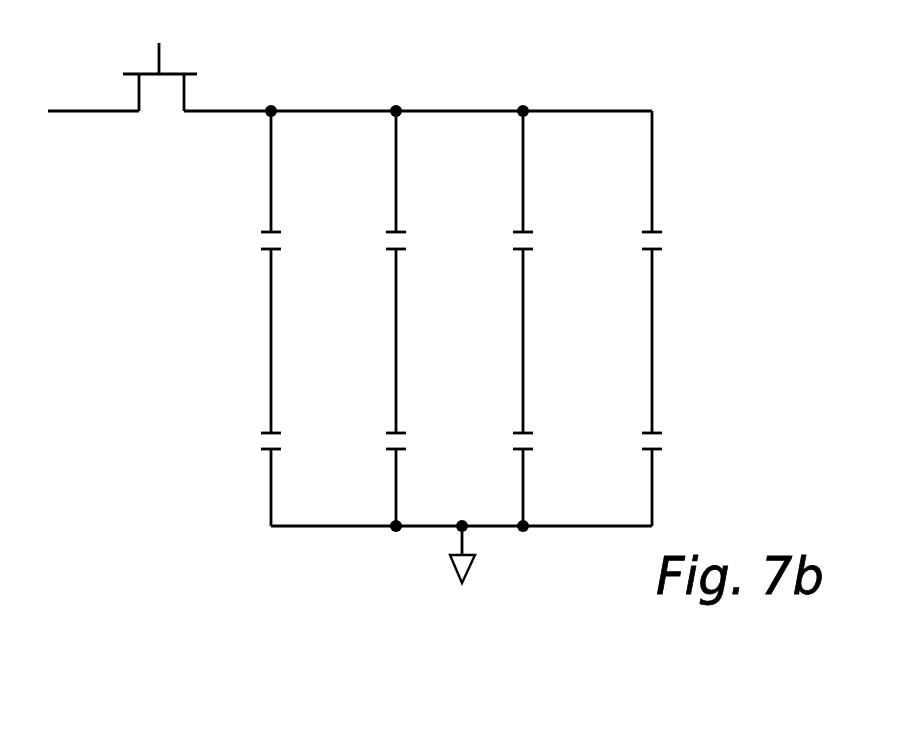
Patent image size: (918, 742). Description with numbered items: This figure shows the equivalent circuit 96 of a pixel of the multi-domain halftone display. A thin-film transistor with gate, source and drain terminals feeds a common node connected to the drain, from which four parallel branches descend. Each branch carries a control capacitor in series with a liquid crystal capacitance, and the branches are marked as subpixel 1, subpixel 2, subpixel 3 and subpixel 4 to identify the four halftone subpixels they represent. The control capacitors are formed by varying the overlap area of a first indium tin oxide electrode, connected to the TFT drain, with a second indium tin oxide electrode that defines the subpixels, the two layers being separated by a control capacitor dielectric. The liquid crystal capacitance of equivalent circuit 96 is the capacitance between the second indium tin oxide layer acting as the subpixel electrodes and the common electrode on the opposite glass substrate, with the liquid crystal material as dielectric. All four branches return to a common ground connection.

The equivalent circuit 96 is at (423, 298).
The subpixel #1 capacitor branch 1 is at (276, 318).
The subpixel #2 capacitor branch 2 is at (403, 318).
The subpixel #3 capacitor branch 3 is at (530, 318).
The subpixel #4 capacitor branch 4 is at (659, 318).